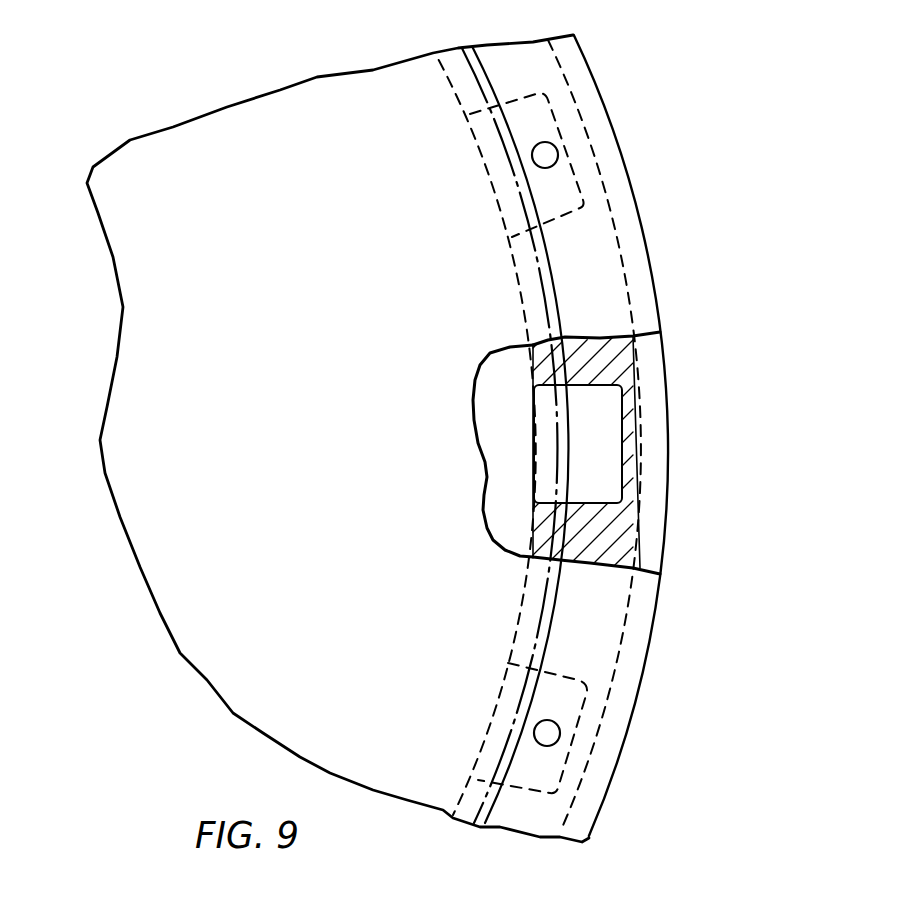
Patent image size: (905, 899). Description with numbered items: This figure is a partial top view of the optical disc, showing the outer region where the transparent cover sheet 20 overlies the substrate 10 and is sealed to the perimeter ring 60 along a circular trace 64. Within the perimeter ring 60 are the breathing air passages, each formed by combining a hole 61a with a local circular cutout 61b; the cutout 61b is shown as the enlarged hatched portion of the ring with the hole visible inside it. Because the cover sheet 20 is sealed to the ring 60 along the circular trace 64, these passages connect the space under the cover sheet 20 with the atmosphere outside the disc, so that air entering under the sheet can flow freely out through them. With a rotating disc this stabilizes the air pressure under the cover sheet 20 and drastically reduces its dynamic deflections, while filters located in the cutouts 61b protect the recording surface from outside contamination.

The substrate 10 is at (493, 386).
The cover sheet 20 is at (148, 507).
The perimeter ring 60 is at (658, 616).
The hole 61a is at (540, 172).
The local circular cutout 61b is at (553, 470).
The circular trace 64 is at (477, 91).